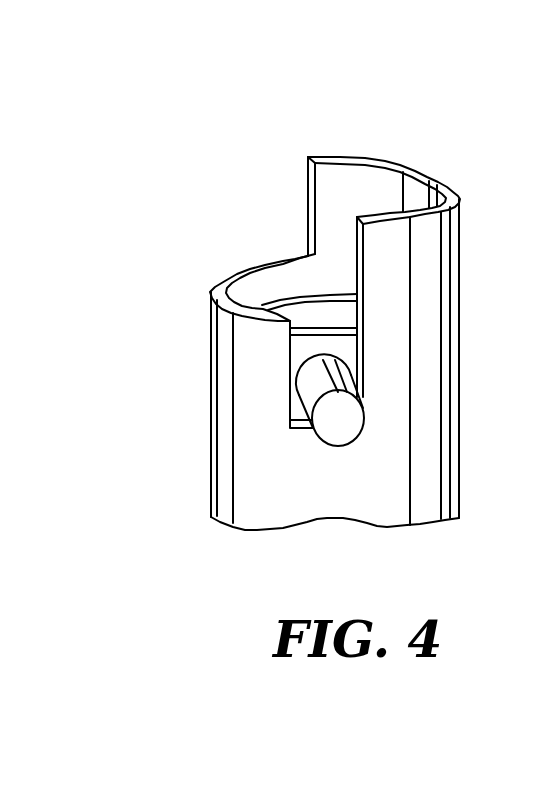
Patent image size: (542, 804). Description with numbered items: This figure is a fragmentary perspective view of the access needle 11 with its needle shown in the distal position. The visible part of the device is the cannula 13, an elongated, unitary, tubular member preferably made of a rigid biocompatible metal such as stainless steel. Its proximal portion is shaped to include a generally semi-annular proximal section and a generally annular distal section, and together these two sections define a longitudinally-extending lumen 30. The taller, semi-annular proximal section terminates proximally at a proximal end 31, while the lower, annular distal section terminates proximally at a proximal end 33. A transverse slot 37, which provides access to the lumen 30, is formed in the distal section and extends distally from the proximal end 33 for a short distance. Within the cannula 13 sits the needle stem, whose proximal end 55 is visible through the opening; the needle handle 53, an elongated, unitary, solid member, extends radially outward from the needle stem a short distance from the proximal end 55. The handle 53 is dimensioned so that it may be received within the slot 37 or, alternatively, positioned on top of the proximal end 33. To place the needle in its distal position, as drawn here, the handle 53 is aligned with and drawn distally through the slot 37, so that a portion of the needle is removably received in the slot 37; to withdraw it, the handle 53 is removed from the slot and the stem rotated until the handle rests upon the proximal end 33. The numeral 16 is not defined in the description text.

The access needle 11 is at (220, 134).
The cannula 13 is at (495, 259).
The slot 16 is at (332, 257).
The lumen 30 is at (386, 187).
The proximal end 31 is at (450, 185).
The proximal end 33 is at (277, 253).
The transverse slot 37 is at (357, 348).
The needle handle 53 is at (312, 393).
The proximal end 55 is at (285, 297).